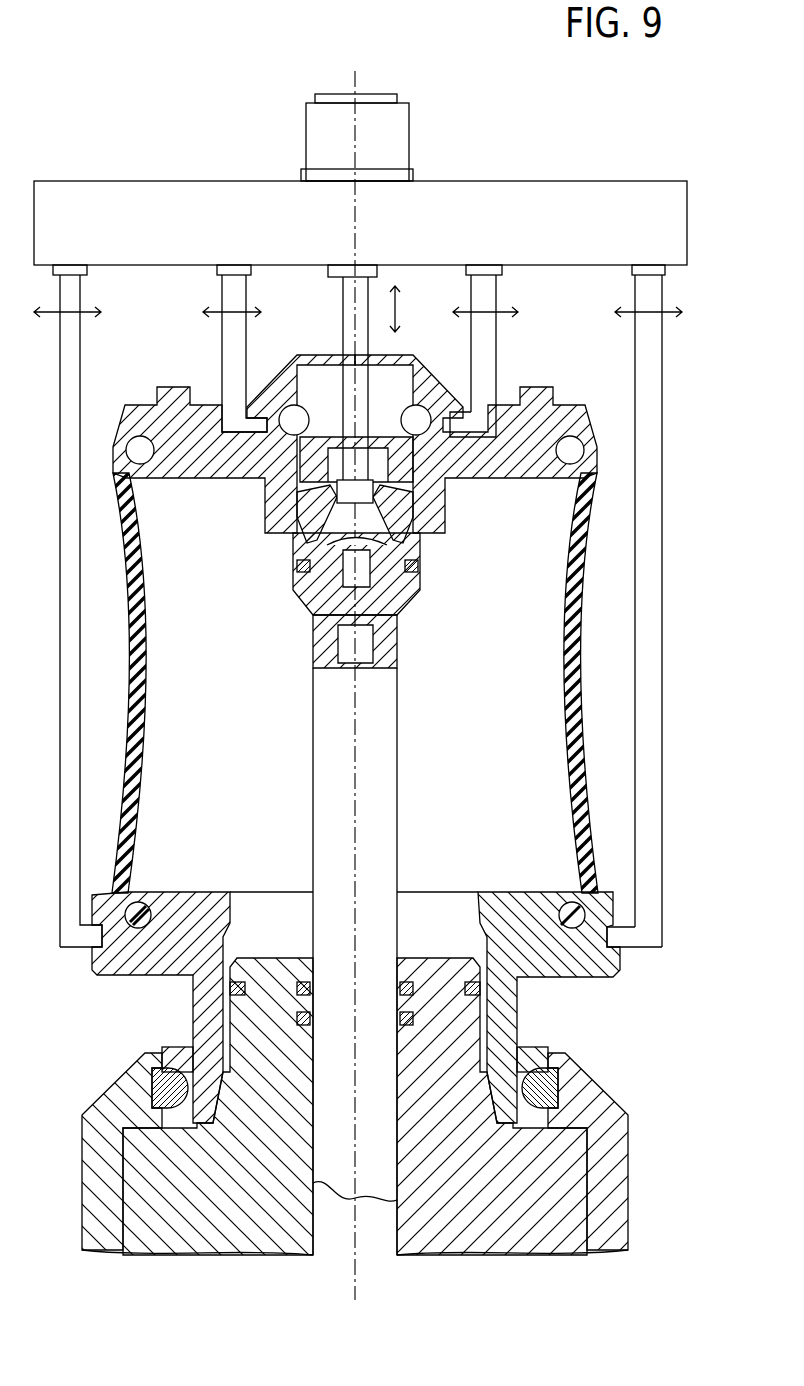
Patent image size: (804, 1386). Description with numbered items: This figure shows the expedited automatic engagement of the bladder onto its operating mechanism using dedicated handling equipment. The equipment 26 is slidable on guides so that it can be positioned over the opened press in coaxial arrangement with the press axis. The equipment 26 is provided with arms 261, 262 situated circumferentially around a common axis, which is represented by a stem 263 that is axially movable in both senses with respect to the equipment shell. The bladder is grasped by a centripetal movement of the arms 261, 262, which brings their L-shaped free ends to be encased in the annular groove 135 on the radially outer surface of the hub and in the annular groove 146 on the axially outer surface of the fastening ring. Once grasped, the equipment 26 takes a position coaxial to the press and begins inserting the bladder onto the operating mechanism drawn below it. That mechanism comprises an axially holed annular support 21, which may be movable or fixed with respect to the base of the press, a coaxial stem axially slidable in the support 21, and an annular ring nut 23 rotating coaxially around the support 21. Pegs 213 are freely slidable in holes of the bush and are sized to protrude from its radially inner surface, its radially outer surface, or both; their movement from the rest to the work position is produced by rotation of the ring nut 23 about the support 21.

The equipment 26 is at (546, 197).
The arm 261 is at (647, 405).
The arm 262 is at (488, 342).
The stem 263 is at (362, 352).
The annular groove 135 is at (470, 414).
The annular groove 146 is at (611, 951).
The annular support 21 is at (448, 1015).
The peg 213 is at (552, 1082).
The ring nut 23 is at (610, 1147).